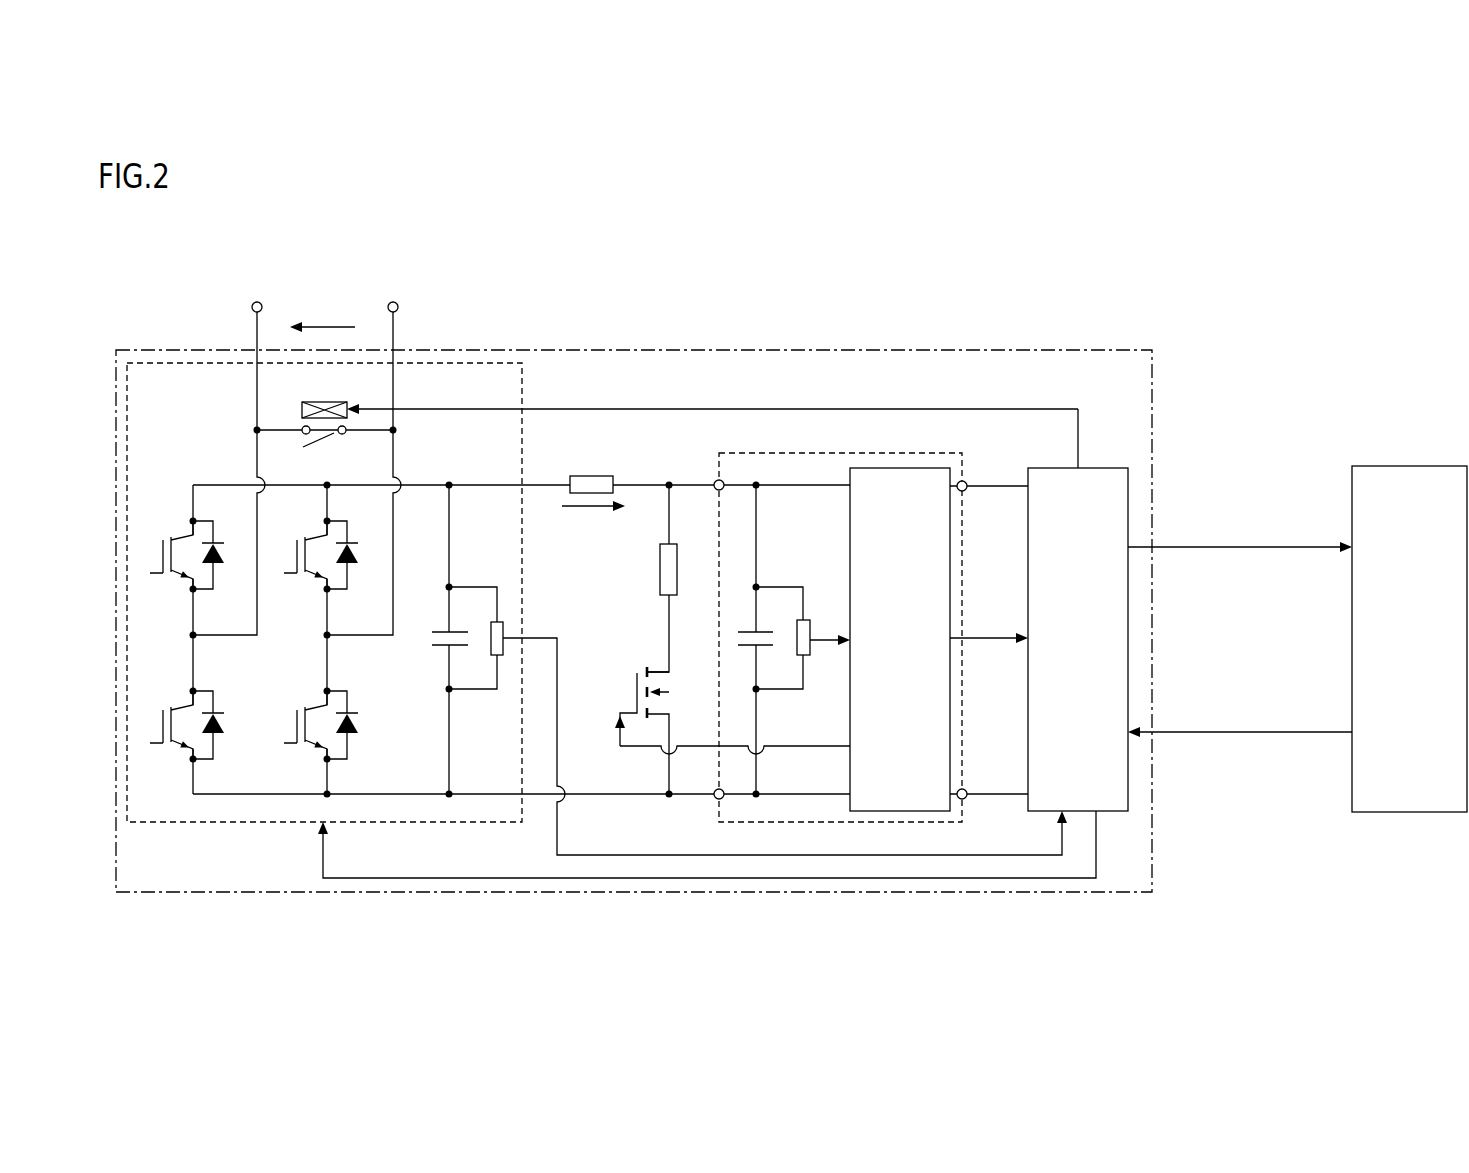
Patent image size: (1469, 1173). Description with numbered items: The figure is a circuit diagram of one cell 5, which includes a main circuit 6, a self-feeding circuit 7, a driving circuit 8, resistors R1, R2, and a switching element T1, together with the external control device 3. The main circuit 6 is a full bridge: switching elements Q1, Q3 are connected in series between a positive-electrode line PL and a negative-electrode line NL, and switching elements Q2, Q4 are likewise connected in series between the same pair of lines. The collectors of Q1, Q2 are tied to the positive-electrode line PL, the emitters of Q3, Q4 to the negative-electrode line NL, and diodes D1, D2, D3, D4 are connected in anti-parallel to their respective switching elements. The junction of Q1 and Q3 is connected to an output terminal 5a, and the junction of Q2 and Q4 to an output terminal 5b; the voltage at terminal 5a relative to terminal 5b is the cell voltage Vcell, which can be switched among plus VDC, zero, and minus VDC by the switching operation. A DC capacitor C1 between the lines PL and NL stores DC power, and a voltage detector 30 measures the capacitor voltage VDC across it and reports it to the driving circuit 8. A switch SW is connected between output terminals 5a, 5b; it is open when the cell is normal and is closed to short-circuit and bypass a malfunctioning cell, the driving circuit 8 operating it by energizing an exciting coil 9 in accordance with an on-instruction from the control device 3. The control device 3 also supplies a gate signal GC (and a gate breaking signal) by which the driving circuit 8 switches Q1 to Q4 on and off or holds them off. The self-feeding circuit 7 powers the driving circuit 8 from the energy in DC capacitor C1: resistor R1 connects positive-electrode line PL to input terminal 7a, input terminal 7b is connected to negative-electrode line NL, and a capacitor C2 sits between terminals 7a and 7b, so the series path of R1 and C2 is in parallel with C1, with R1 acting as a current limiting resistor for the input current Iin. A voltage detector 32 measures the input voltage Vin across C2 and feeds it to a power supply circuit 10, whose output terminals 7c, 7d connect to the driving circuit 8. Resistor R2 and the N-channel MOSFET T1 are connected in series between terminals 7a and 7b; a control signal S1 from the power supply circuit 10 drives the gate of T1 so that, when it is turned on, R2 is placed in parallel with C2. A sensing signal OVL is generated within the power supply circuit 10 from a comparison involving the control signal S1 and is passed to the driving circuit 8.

The control device 3 is at (1437, 466).
The cell 5 is at (1110, 350).
The output terminal 5a is at (255, 302).
The output terminal 5b is at (395, 302).
The main circuit 6 is at (472, 823).
The self-feeding circuit 7 is at (930, 453).
The input terminal 7a is at (715, 480).
The input terminal 7b is at (716, 800).
The output terminal 7c is at (966, 481).
The output terminal 7d is at (965, 799).
The driving circuit 8 is at (1108, 468).
The exciting coil 9 is at (323, 403).
The power supply circuit 10 is at (952, 771).
The voltage detector 30 is at (498, 658).
The voltage detector 32 is at (805, 660).
The switching element Q1 is at (164, 539).
The switching element Q2 is at (298, 539).
The switching element Q3 is at (164, 709).
The switching element Q4 is at (298, 709).
The diode D1 is at (215, 566).
The diode D2 is at (349, 566).
The diode D3 is at (215, 736).
The diode D4 is at (349, 736).
The DC capacitor C1 is at (445, 650).
The capacitor C2 is at (752, 648).
The resistor R1 is at (592, 475).
The resistor R2 is at (658, 568).
The switching element T1 is at (636, 681).
The switch SW is at (332, 443).
The positive-electrode line PL is at (472, 484).
The negative-electrode line NL is at (592, 797).
The capacitor voltage VDC is at (927, 686).
The cell voltage Vcell is at (322, 315).
The input current Iin is at (593, 518).
The input voltage Vin is at (830, 629).
The control signal S1 is at (735, 738).
The sensing signal OVL is at (989, 626).
The gate signal GC is at (1240, 756).